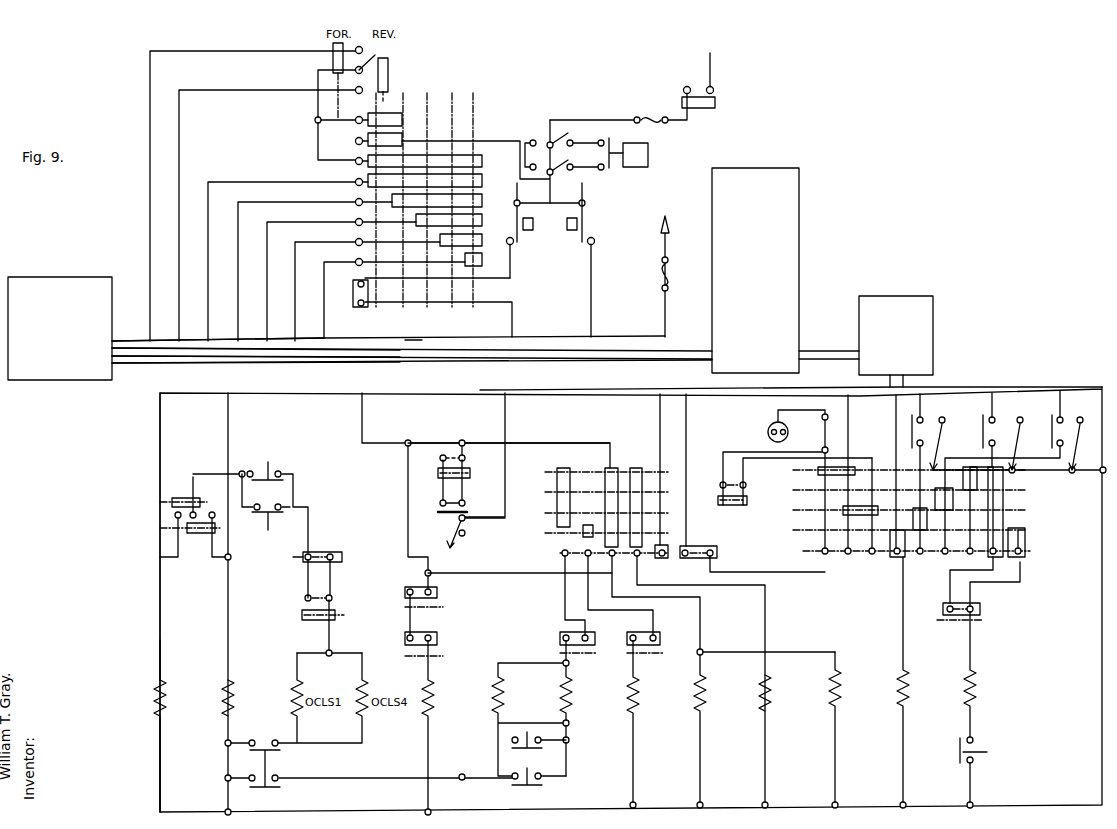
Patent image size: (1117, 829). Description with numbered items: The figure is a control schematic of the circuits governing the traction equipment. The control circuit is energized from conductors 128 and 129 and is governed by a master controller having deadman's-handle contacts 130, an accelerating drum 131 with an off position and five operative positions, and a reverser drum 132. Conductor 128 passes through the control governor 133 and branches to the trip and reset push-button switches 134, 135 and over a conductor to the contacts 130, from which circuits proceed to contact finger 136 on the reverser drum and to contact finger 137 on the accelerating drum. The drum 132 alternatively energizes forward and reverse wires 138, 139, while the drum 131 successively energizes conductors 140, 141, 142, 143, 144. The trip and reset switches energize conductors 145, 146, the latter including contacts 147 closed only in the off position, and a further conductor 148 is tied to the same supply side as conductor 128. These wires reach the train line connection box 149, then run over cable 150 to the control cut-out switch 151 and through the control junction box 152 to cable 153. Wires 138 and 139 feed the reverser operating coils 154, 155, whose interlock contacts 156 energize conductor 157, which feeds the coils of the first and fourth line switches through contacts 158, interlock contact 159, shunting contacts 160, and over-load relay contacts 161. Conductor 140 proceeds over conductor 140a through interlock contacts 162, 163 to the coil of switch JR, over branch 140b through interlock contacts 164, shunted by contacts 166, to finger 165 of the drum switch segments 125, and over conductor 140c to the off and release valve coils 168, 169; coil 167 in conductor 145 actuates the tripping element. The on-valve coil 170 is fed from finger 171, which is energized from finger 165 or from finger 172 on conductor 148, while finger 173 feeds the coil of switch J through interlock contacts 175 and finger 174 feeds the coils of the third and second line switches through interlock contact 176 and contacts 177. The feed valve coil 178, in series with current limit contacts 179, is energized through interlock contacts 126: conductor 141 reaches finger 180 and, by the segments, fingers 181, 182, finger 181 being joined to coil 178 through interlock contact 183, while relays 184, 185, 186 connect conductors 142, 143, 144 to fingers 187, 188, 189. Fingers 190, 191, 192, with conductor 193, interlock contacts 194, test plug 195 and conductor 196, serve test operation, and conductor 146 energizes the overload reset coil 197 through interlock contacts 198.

The interlock contact segments 125 is at (526, 539).
The interlock contacts 126 is at (1065, 522).
The conductor 128 is at (711, 60).
The conductor 129 is at (597, 808).
The deadman's-handle contacts 130 is at (358, 140).
The accelerating drum 131 is at (435, 217).
The reverser drum 132 is at (391, 78).
The control governor 133 is at (656, 187).
The trip push-button switch 134 is at (589, 226).
The reset push-button switch 135 is at (519, 232).
The contact finger 136 is at (381, 56).
The contact finger 137 is at (358, 163).
The forward wire 138 is at (282, 51).
The reverse wire 139 is at (282, 90).
The conductor 140 is at (258, 182).
The conductor 140a is at (408, 476).
The branch 140b is at (434, 443).
The conductor 140c is at (520, 582).
The conductor 141 is at (258, 202).
The conductor 142 is at (312, 222).
The conductor 143 is at (312, 242).
The conductor 144 is at (340, 262).
The conductor 145 is at (591, 272).
The conductor 146 is at (510, 278).
The contacts 147 is at (353, 293).
The conductor 148 is at (666, 233).
The train line connection box 149 is at (72, 361).
The cable 150 is at (258, 367).
The control cut-out switch 151 is at (772, 267).
The control junction box 152 is at (910, 342).
The cable 153 is at (821, 388).
The operating coil 154 is at (166, 700).
The operating coil 155 is at (234, 700).
The interlock contacts 156 is at (208, 578).
The conductor 157 is at (204, 474).
The contacts 158 is at (284, 531).
The interlock contact 159 is at (376, 565).
The interlock contacts 160 is at (305, 598).
The over-load relay contacts 161 is at (306, 806).
The interlock contacts 162 is at (405, 592).
The interlock contacts 163 is at (405, 638).
The interlock contacts 164 is at (465, 458).
The contact finger 165 is at (614, 558).
The contacts 166 is at (440, 501).
The operating coil 167 is at (440, 517).
The operating coil 168 is at (707, 690).
The operating coil 169 is at (841, 688).
The operating coil 170 is at (772, 690).
The contact finger 171 is at (639, 558).
The contact finger 172 is at (664, 558).
The contact finger 173 is at (587, 557).
The contact finger 174 is at (563, 557).
The interlock contacts 175 is at (660, 638).
The interlock contact 176 is at (560, 638).
The contacts 177 is at (544, 805).
The feed valve coil 178 is at (979, 690).
The current limit switch contacts 179 is at (986, 772).
The contact finger 180 is at (897, 561).
The contact finger 181 is at (1003, 559).
The contact finger 182 is at (1022, 552).
The interlock contact 183 is at (943, 609).
The relay 184 is at (976, 451).
The relay 185 is at (1046, 458).
The relay 186 is at (1106, 458).
The contact finger 187 is at (924, 560).
The contact finger 188 is at (949, 560).
The contact finger 189 is at (974, 560).
The contact finger 190 is at (870, 560).
The contact finger 191 is at (845, 560).
The contact finger 192 is at (819, 560).
The conductor 193 is at (824, 437).
The interlock contacts 194 is at (748, 485).
The test plug 195 is at (771, 429).
The conductor 196 is at (849, 407).
The reset coil 197 is at (909, 690).
The interlock contacts 198 is at (703, 547).